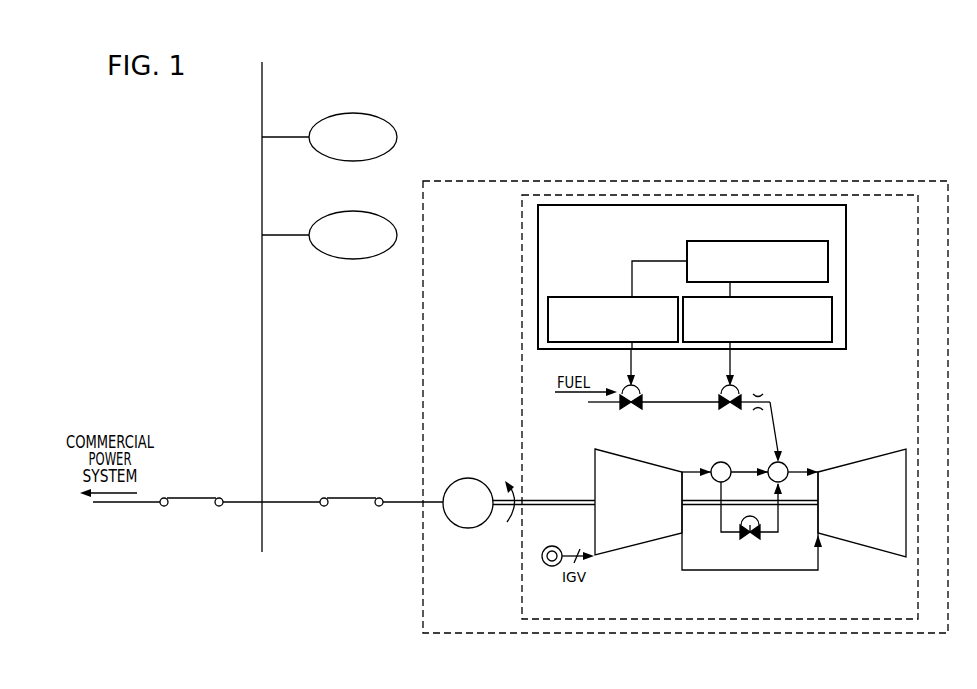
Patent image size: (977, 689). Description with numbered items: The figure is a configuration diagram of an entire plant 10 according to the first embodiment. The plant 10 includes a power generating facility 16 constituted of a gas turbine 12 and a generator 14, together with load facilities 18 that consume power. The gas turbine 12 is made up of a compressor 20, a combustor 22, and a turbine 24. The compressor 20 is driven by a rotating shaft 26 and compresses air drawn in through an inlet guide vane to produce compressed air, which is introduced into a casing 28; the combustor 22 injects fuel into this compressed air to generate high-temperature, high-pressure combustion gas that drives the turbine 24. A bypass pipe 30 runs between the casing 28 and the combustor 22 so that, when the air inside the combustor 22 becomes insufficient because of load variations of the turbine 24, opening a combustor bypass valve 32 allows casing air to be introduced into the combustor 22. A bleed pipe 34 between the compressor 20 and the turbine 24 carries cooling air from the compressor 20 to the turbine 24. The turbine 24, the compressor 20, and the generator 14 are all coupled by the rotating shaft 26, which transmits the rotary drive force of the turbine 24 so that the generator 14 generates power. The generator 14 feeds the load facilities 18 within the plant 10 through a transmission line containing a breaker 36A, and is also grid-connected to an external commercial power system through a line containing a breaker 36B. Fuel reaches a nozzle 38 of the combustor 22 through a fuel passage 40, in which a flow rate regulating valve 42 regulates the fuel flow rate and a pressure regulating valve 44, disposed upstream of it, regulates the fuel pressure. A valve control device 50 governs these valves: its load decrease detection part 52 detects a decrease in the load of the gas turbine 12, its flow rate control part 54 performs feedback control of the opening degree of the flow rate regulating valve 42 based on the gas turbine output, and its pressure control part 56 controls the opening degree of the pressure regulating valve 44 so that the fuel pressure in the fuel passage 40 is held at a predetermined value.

The plant 10 is at (634, 112).
The gas turbine 12 is at (520, 370).
The generator 14 is at (466, 478).
The power generating facility 16 is at (693, 181).
The load facilities 18 is at (353, 112).
The compressor 20 is at (640, 461).
The combustor 22 is at (788, 465).
The turbine 24 is at (862, 461).
The rotating shaft 26 is at (700, 507).
The casing 28 is at (721, 462).
The bypass pipe 30 is at (723, 490).
The combustor bypass valve 32 is at (750, 540).
The bleed pipe 34 is at (748, 572).
The breaker 36A is at (356, 484).
The breaker 36B is at (202, 484).
The nozzle 38 is at (758, 392).
The fuel passage 40 is at (678, 405).
The flow rate regulating valve 42 is at (725, 388).
The pressure regulating valve 44 is at (636, 388).
The valve control device 50 is at (694, 277).
The load decrease detection part 52 is at (828, 261).
The flow rate control part 54 is at (832, 327).
The pressure control part 56 is at (548, 327).